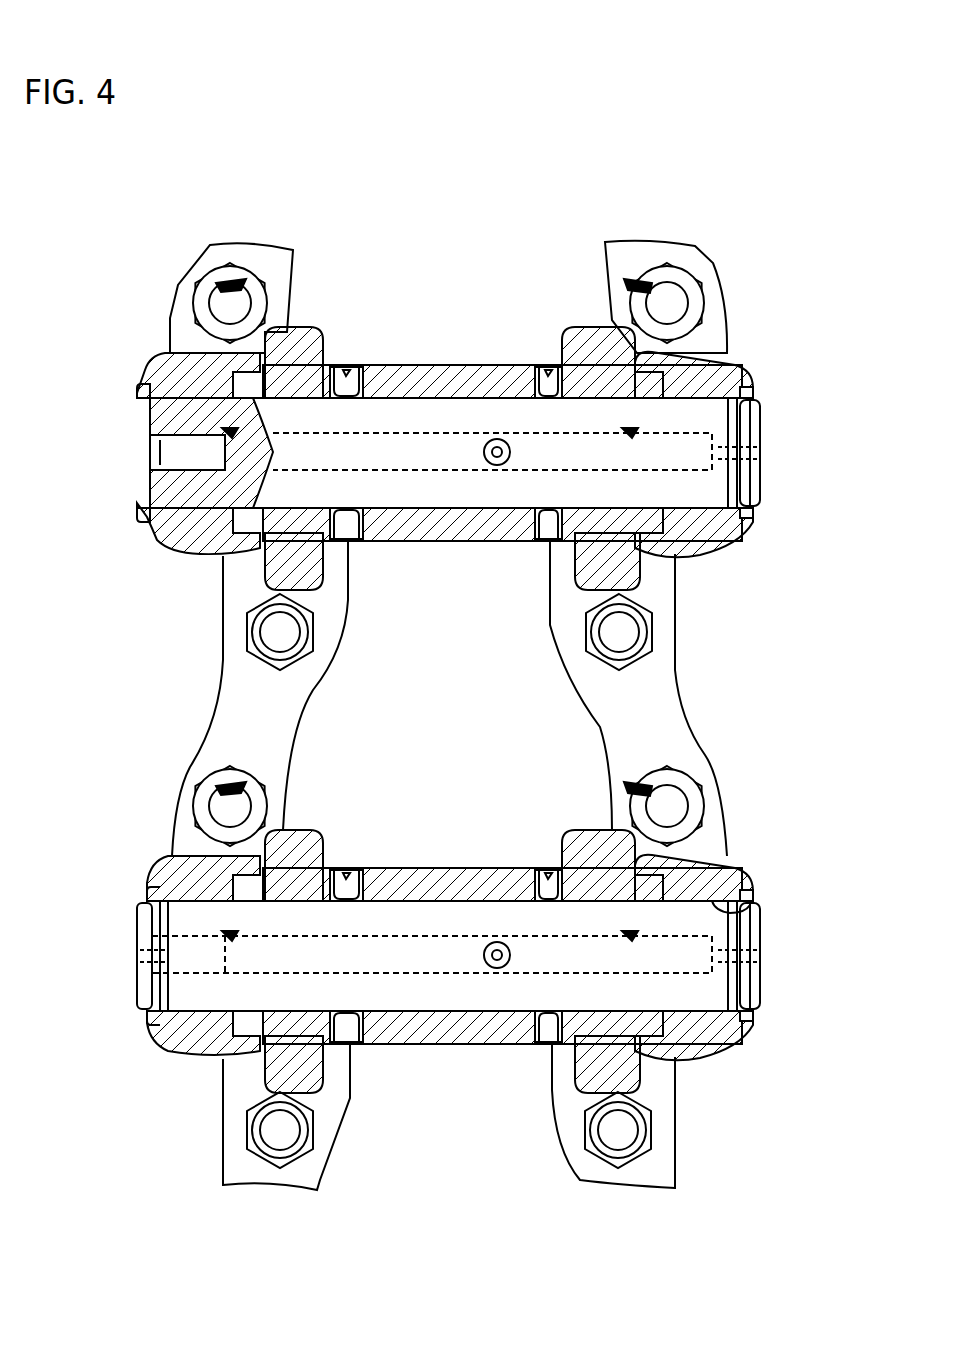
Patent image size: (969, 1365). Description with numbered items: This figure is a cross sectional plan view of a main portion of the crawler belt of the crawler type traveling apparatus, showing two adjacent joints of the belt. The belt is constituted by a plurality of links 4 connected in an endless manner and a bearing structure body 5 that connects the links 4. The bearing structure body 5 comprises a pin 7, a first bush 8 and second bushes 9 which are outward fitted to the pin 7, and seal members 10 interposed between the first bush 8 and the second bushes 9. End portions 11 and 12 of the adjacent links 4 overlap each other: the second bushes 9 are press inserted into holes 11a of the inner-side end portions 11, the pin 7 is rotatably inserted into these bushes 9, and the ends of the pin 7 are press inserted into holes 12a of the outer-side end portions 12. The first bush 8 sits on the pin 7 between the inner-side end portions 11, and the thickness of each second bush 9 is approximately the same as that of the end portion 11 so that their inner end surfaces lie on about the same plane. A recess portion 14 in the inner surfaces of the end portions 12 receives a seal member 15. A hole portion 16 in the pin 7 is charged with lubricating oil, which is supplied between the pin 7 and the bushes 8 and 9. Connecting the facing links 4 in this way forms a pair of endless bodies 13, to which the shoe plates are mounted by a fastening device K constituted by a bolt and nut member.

The link 4 is at (181, 281).
The bearing structure body 5 is at (470, 358).
The pin 7 is at (722, 487).
The first bush 8 is at (430, 373).
The second bush 9 is at (292, 372).
The seal member 10 is at (353, 398).
The end portion 11 is at (580, 555).
The hole 11a is at (313, 512).
The end portion 12 is at (742, 590).
The hole 12a is at (780, 390).
The endless body 13 is at (171, 691).
The recess portion 14 is at (147, 384).
The seal member 15 is at (225, 545).
The hole portion 16 is at (253, 468).
The fastening device K is at (283, 632).